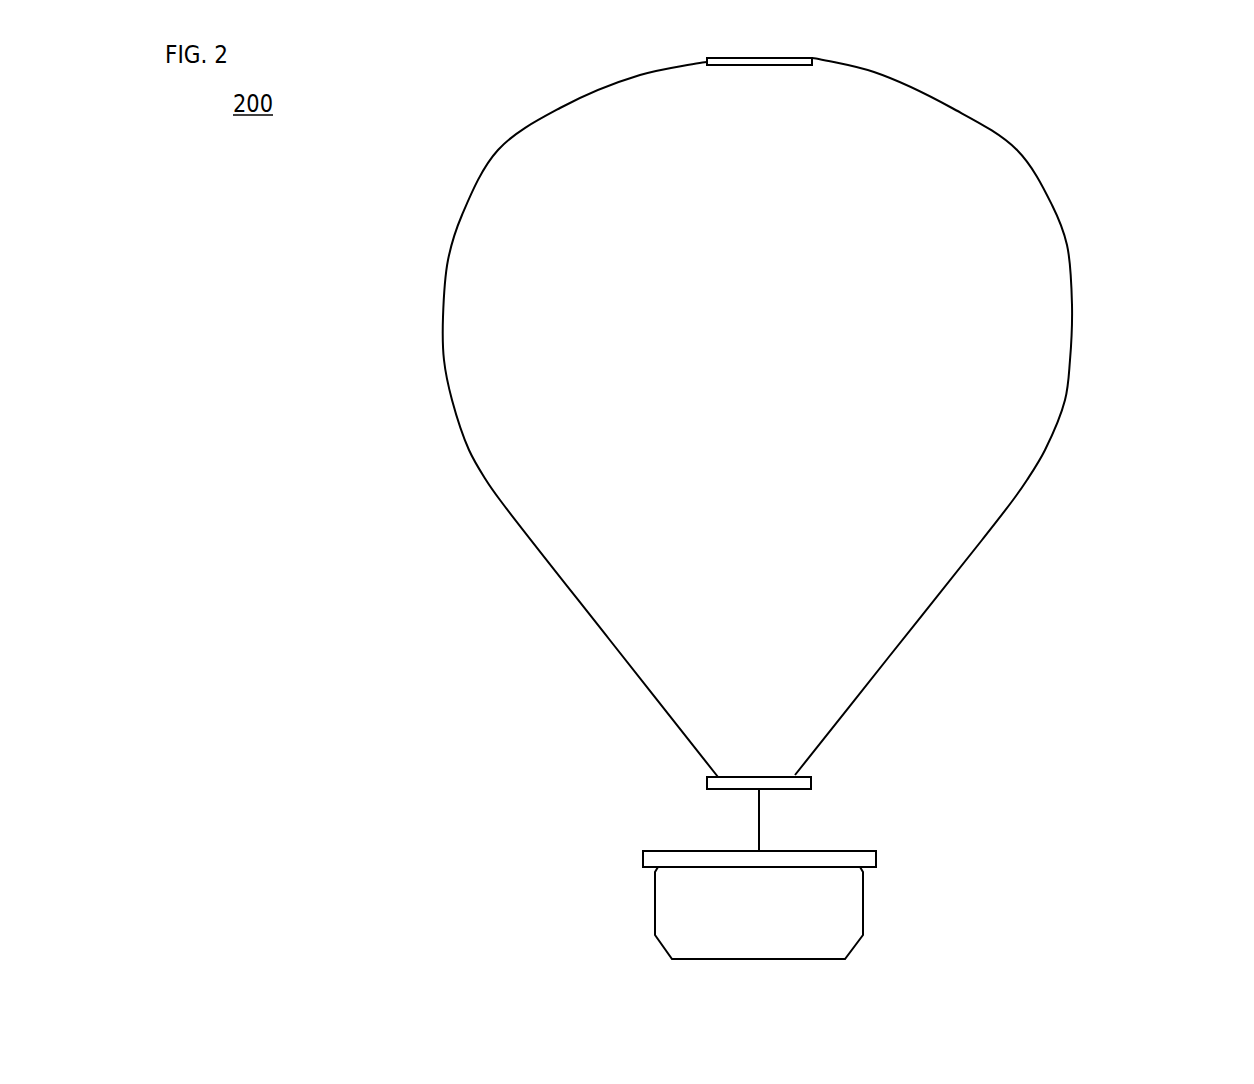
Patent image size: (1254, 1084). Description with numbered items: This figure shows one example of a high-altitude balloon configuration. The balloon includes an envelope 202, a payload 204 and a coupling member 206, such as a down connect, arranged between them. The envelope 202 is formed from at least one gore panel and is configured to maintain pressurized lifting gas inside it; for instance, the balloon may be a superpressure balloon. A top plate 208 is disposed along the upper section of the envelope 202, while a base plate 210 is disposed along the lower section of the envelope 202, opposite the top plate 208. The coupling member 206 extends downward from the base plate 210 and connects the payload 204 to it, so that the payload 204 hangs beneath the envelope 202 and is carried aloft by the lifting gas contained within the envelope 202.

The envelope 202 is at (1060, 415).
The payload 204 is at (863, 910).
The coupling member 206 is at (760, 818).
The top plate 208 is at (812, 58).
The base plate 210 is at (812, 778).